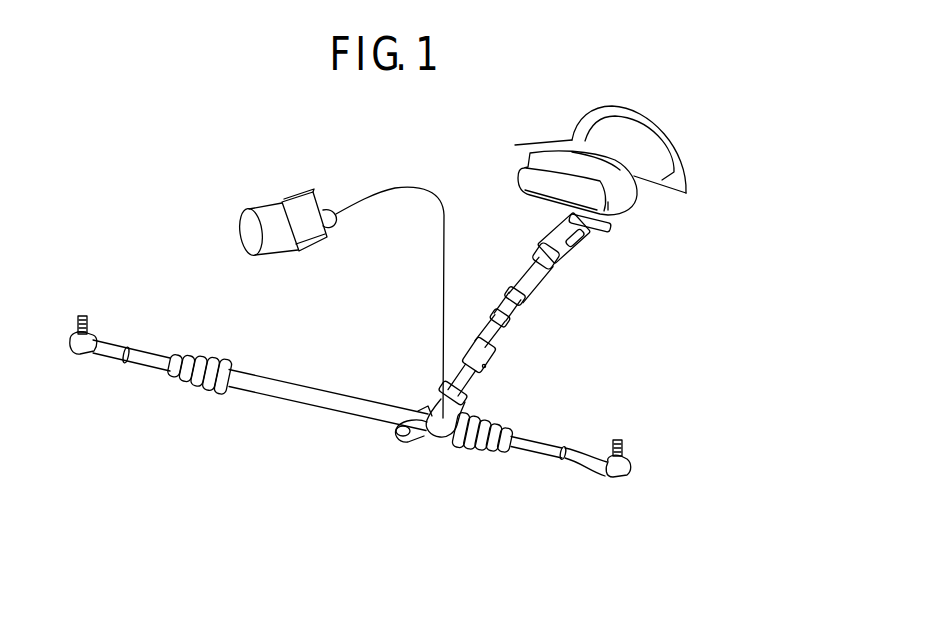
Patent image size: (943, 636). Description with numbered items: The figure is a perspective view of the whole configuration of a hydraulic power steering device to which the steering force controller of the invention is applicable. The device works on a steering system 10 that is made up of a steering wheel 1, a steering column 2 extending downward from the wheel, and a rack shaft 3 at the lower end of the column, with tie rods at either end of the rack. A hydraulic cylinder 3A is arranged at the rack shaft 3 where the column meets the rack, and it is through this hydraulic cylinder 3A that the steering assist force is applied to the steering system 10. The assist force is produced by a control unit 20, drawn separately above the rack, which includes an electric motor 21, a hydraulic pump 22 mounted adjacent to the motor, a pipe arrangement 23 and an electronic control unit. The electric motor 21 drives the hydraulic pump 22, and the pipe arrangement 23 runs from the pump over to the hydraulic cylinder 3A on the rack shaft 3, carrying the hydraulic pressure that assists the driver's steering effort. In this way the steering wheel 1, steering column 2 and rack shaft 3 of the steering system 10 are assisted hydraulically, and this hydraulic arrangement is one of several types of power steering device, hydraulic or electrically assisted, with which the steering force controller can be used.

The steering wheel 1 is at (668, 137).
The steering column 2 is at (565, 257).
The rack shaft 3 is at (293, 405).
The hydraulic cylinder 3A is at (428, 433).
The steering system 10 is at (584, 338).
The control unit 20 is at (311, 257).
The electric motor 21 is at (247, 232).
The hydraulic pump 22 is at (301, 197).
The pipe arrangement 23 is at (378, 200).